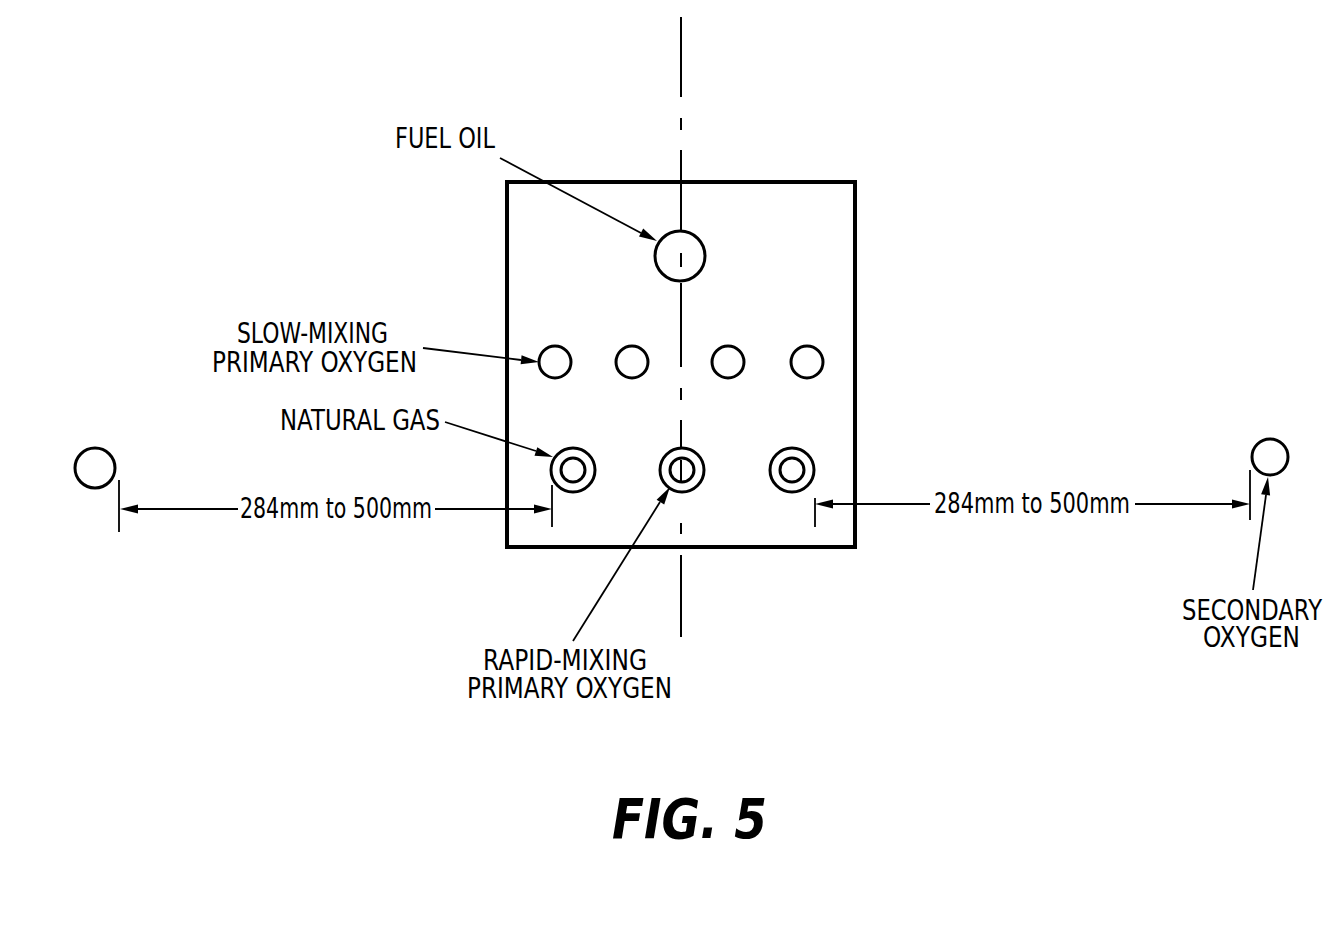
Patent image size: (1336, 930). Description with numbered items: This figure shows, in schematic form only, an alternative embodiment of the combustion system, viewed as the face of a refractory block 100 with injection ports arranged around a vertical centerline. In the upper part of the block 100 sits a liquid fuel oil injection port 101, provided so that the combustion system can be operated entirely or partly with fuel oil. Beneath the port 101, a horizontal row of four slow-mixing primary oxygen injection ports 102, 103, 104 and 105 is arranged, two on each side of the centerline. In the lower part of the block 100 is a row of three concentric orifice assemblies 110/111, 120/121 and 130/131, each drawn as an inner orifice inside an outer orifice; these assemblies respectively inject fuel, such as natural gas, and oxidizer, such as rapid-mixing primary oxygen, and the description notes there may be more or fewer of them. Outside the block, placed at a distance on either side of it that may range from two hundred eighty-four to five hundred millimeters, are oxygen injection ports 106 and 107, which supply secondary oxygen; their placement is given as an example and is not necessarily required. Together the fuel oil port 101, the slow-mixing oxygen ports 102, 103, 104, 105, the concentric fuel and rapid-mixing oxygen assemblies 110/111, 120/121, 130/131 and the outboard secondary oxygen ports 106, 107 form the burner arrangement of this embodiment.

The refractory block 100 is at (831, 219).
The liquid fuel oil injection port 101 is at (689, 232).
The slow-mixing primary oxygen injection port 102 is at (556, 356).
The slow-mixing primary oxygen injection port 103 is at (632, 356).
The slow-mixing primary oxygen injection port 104 is at (731, 358).
The slow-mixing primary oxygen injection port 105 is at (812, 360).
The oxygen injection port 106 is at (1270, 458).
The oxygen injection port 107 is at (96, 466).
The concentric orifice assembly orifice 110 is at (572, 492).
The concentric orifice assembly orifice 111 is at (580, 455).
The concentric orifice assembly orifice 120 is at (690, 452).
The concentric orifice assembly orifice 121 is at (688, 480).
The concentric orifice assembly orifice 130 is at (806, 455).
The concentric orifice assembly orifice 131 is at (792, 482).